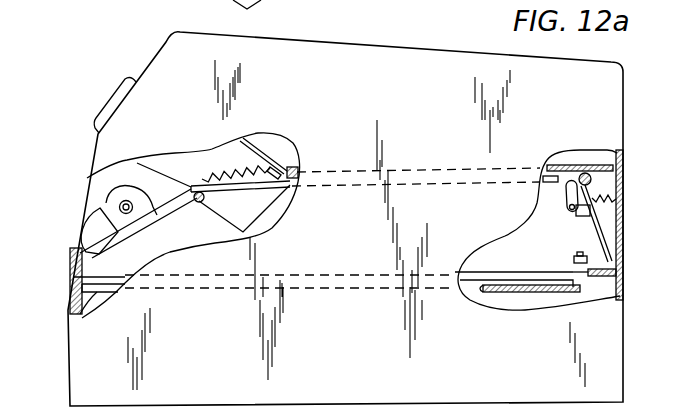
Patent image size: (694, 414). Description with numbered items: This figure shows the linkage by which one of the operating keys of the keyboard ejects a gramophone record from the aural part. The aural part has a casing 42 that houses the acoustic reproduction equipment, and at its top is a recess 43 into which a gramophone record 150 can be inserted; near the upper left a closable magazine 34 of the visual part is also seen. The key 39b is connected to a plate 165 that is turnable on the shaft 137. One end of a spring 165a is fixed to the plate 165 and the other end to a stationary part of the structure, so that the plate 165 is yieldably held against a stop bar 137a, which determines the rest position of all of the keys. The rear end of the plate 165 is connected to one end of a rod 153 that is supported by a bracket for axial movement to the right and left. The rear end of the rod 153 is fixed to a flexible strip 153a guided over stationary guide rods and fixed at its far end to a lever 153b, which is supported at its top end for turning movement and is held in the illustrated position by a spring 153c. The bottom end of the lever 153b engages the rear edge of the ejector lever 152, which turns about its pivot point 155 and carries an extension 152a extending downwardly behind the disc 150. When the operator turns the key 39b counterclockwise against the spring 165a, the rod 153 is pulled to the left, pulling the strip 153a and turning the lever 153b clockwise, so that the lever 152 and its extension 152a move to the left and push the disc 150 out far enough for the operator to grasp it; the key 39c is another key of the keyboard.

The closable magazine 34 is at (111, 100).
The key 39b is at (90, 229).
The latch member 39c is at (60, 15).
The casing 42 is at (85, 377).
The recess 43 is at (74, 284).
The shaft 137 is at (119, 207).
The stop bar 137a is at (198, 203).
The gramophone record 150 is at (73, 310).
The ejector 152 is at (622, 277).
The extension 152a is at (580, 293).
The rod 153 is at (443, 186).
The flexible strip 153a is at (557, 171).
The lever 153b is at (608, 236).
The spring 153c is at (605, 193).
The pivot point 155 is at (571, 262).
The plate 165 is at (124, 192).
The spring 165a is at (253, 172).